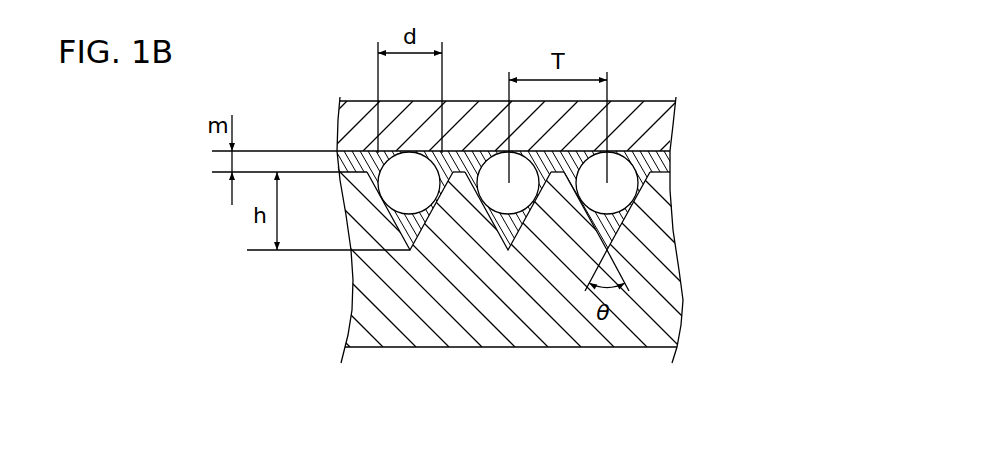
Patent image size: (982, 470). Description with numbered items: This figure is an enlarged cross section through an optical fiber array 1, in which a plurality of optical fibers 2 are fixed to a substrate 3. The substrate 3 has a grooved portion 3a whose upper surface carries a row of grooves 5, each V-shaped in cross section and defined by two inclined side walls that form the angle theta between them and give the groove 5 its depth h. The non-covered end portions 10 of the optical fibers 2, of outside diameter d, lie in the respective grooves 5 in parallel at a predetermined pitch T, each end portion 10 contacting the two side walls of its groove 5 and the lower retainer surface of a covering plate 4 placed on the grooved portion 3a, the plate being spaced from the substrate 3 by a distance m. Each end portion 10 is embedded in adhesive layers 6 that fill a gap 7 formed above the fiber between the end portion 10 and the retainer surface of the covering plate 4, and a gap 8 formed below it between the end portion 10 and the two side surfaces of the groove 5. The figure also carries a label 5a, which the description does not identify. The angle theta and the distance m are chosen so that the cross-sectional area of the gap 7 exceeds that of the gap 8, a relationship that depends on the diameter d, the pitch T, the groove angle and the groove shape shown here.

The optical fiber array 1 is at (510, 219).
The optical fiber 2 is at (584, 291).
The substrate 3 is at (510, 287).
The grooved portion 3a is at (562, 340).
The covering plate 4 is at (363, 110).
The groove 5 is at (613, 237).
The adhesive layer surface 5a is at (668, 152).
The adhesive layer 6 is at (637, 170).
The gap 7 is at (466, 160).
The gap 8 is at (428, 212).
The non-covered end portion 10 is at (623, 193).